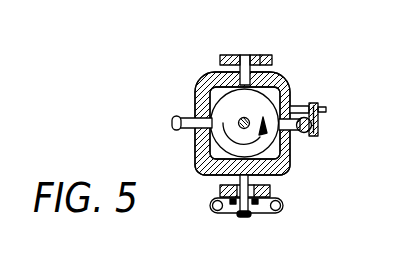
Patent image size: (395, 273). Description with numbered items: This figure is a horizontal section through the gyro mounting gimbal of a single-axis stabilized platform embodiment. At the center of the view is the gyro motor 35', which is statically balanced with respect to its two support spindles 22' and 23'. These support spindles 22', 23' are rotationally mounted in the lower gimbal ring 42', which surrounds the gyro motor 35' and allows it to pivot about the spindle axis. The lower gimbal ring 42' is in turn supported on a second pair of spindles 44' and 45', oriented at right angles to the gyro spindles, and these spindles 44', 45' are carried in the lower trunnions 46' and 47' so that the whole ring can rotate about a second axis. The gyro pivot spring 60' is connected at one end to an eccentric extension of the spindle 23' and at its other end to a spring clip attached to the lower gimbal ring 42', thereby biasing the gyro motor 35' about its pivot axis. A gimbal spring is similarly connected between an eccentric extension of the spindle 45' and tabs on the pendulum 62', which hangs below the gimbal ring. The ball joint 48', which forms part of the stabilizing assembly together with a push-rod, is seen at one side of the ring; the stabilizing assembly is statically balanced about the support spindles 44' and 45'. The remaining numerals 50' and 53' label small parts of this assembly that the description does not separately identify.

The support spindle 22' is at (282, 123).
The support spindle 23' is at (204, 129).
The gyro motor 35' is at (296, 158).
The lower gimbal ring 42' is at (219, 112).
The spindle 44' is at (234, 39).
The spindle 45' is at (217, 199).
The lower trunnion 46' is at (277, 49).
The lower trunnion 47' is at (282, 210).
The ball joint 48' is at (341, 112).
The side connector 50' is at (318, 89).
The lower stem nut 53' is at (261, 218).
The gyro pivot spring 60' is at (162, 107).
The pendulum 62' is at (217, 223).